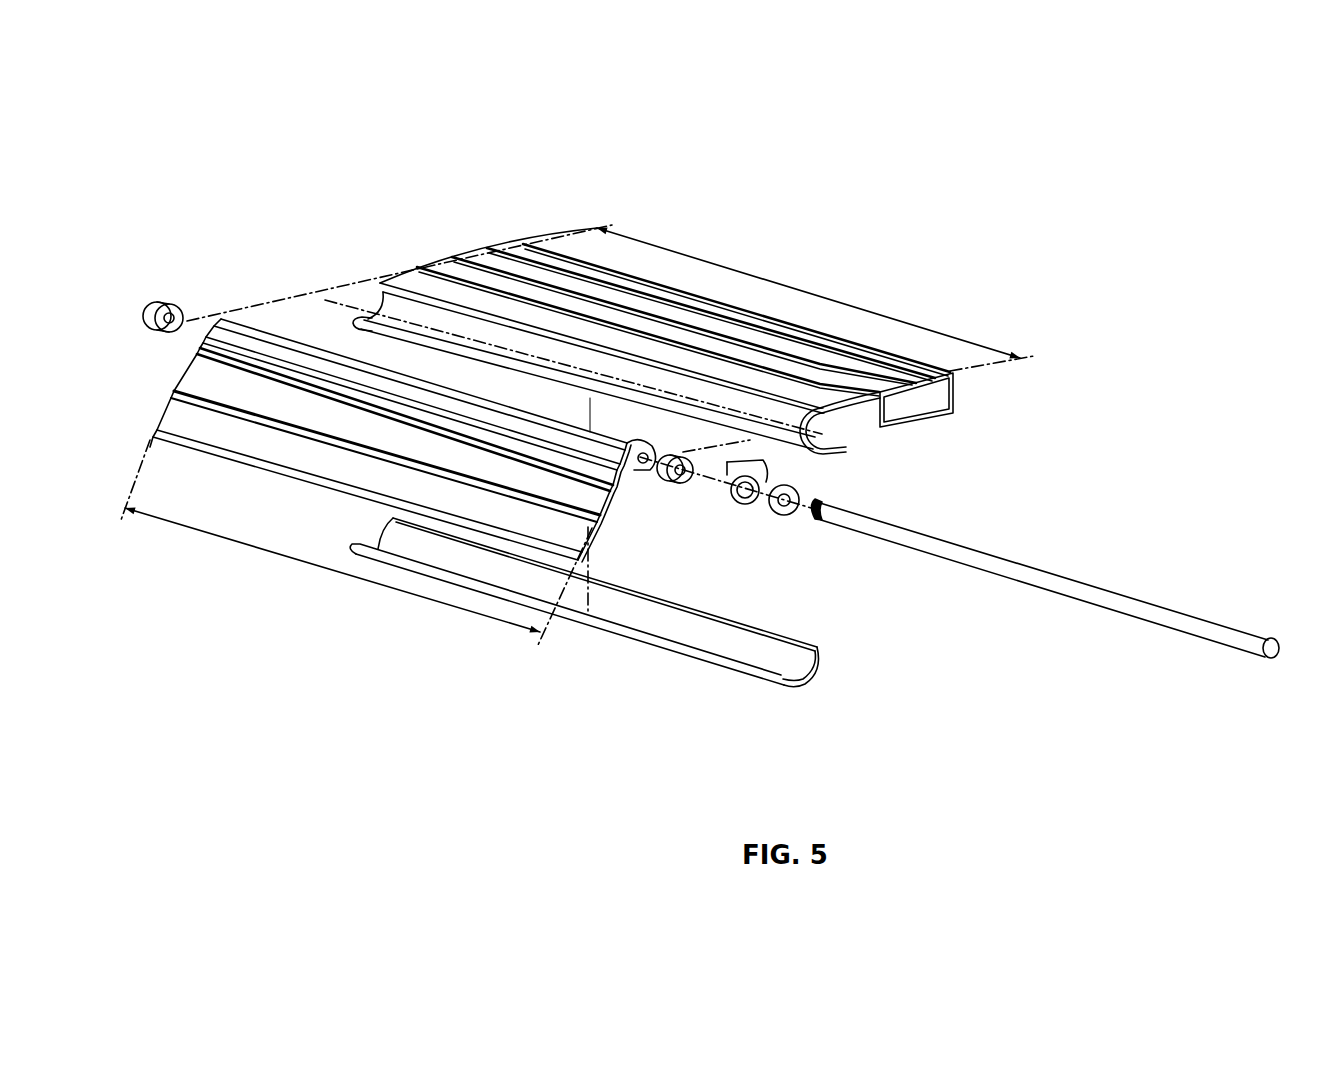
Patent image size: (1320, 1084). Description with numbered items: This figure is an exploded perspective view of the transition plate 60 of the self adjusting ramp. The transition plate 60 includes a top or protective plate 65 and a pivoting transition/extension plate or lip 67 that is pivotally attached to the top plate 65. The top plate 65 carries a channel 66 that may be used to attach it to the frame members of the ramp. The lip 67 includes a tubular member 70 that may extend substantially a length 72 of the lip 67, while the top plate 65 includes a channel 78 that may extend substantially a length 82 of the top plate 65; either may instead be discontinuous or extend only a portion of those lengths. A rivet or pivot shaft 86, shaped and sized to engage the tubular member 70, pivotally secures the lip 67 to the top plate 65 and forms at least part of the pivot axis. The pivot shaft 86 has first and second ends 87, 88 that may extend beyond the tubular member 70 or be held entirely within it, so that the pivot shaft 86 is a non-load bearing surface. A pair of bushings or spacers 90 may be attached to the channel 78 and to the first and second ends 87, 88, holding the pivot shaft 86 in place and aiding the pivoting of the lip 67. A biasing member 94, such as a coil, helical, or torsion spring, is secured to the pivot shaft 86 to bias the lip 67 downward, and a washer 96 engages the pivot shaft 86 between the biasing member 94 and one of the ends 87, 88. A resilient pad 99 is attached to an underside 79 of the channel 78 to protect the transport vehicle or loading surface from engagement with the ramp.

The transition plate 60 is at (943, 205).
The top plate 65 is at (650, 282).
The channel 66 is at (933, 413).
The lip 67 is at (268, 454).
The tubular member 70 is at (641, 468).
The length of the lip 72 is at (340, 573).
The channel 78 is at (367, 316).
The underside of the channel 79 is at (815, 447).
The length of the top plate 82 is at (813, 293).
The pivot shaft 86 is at (1045, 583).
The first end 87 is at (822, 502).
The second end 88 is at (1268, 636).
The bushing 90 is at (175, 307).
The biasing member 94 is at (745, 505).
The washer 96 is at (789, 516).
The pad 99 is at (795, 686).